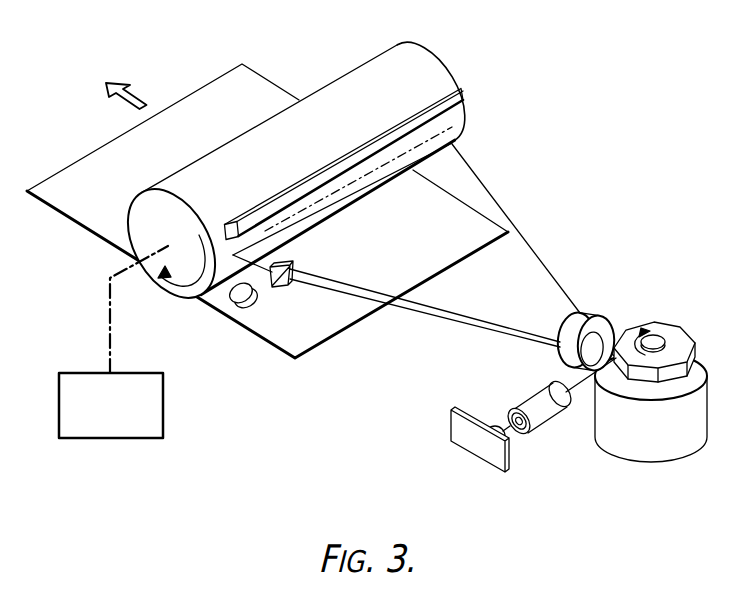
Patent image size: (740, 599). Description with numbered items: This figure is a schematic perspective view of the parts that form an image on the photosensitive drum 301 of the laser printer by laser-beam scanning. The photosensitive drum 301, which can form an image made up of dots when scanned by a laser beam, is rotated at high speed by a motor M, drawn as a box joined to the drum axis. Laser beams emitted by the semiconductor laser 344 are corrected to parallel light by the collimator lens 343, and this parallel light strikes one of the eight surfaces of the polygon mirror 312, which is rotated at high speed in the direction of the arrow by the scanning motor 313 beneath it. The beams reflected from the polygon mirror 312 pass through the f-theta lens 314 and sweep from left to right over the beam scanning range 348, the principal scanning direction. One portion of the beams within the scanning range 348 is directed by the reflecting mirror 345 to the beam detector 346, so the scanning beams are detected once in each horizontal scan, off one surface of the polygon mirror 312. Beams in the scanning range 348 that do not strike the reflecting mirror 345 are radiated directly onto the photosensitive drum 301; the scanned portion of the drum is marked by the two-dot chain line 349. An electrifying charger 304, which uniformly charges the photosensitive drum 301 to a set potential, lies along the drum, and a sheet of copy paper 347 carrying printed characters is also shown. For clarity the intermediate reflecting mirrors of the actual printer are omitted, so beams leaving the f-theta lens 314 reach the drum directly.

The photosensitive drum 301 is at (440, 63).
The main charger 304 is at (467, 92).
The polygon mirror 312 is at (684, 330).
The scanning motor 313 is at (633, 435).
The f.θ lens 314 is at (590, 312).
The collimator lens 343 is at (527, 397).
The semiconductor laser 344 is at (482, 463).
The reflecting mirror 345 is at (278, 288).
The beam detector 346 is at (240, 308).
The recording sheet 347 is at (93, 234).
The beam scanning range 348 is at (495, 327).
The scanning line 349 is at (453, 146).
The motor M is at (130, 438).